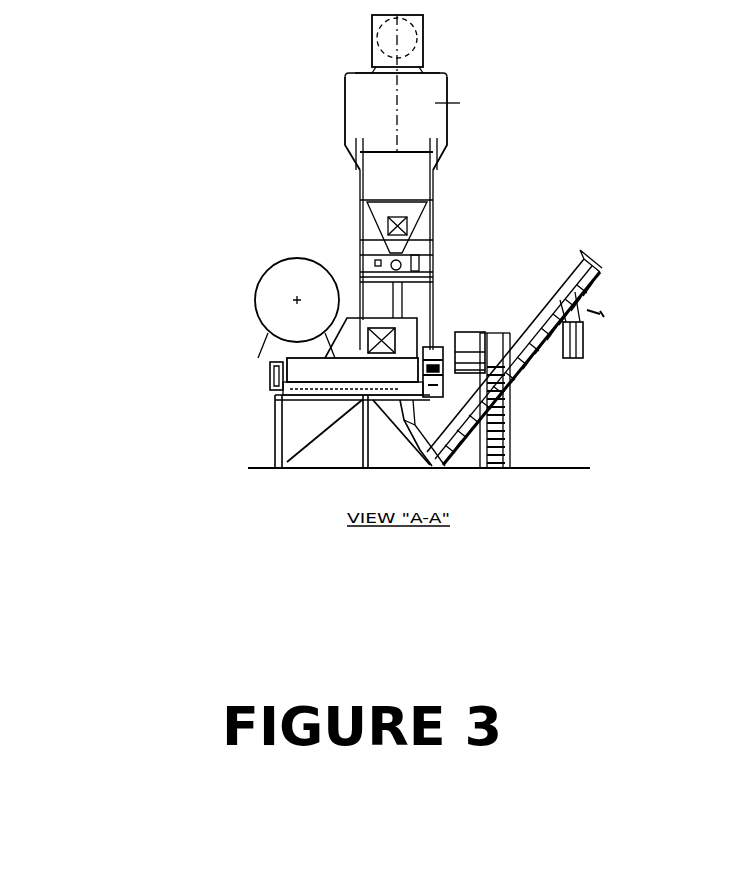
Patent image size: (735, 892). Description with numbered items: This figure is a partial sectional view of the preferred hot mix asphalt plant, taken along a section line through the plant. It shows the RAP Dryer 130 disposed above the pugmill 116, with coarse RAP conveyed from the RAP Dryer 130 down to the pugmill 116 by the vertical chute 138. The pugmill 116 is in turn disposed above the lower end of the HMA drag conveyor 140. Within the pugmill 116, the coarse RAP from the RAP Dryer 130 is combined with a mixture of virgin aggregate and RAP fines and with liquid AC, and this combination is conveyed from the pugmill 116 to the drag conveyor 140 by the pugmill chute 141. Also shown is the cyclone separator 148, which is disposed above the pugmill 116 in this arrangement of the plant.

The cyclone separator 148 is at (459, 92).
The RAP Dryer 130 is at (278, 277).
The vertical chute 138 is at (290, 362).
The pugmill 116 is at (283, 393).
The pugmill chute 141 is at (410, 400).
The HMA drag conveyor 140 is at (580, 252).